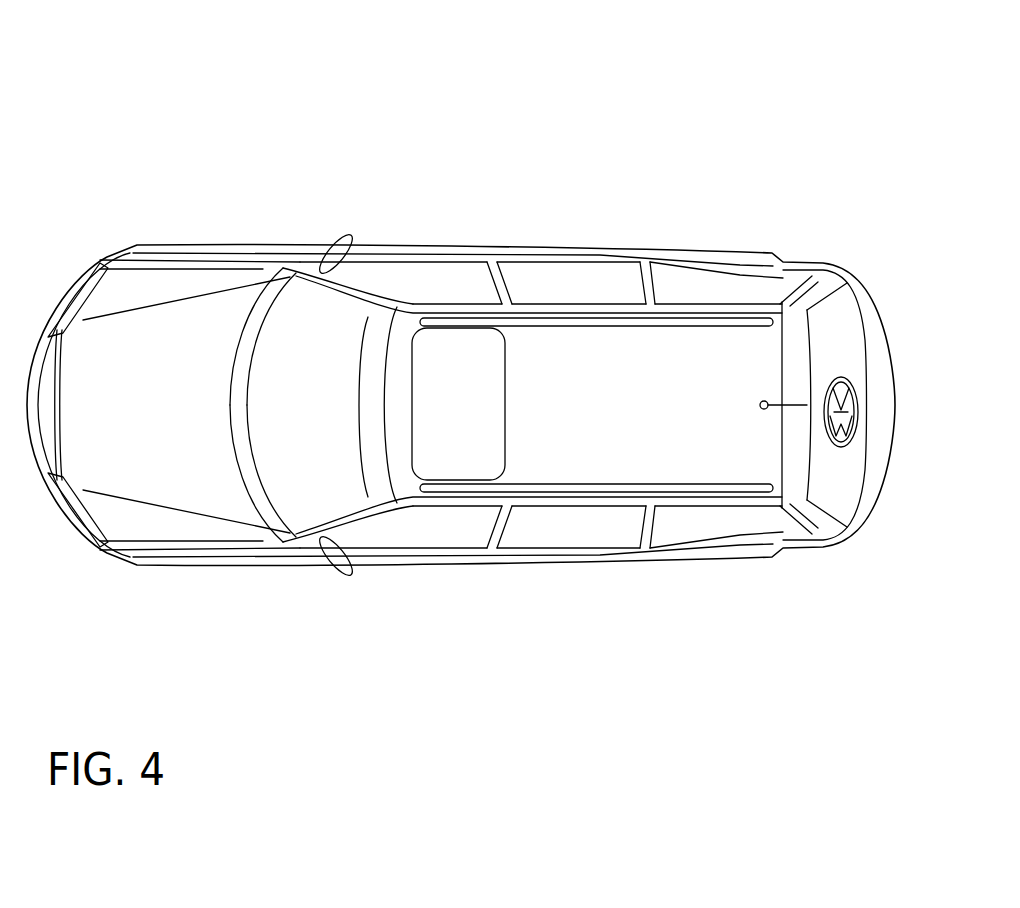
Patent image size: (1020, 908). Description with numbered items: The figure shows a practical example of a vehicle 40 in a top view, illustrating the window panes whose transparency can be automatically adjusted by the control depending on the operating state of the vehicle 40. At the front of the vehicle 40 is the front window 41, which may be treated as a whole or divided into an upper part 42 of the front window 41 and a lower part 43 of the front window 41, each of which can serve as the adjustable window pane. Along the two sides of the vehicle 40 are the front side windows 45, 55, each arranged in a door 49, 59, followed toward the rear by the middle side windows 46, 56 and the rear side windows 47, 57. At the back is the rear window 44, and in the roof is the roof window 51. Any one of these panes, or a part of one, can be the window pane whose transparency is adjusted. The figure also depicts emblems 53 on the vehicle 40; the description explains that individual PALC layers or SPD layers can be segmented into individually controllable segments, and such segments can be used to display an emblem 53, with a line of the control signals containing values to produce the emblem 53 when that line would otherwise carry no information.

The vehicle 40 is at (183, 154).
The front window 41 is at (307, 315).
The upper part of the front window 42 is at (378, 495).
The lower part of the front window 43 is at (305, 495).
The rear window 44 is at (835, 320).
The front side window 45 is at (463, 527).
The middle side window 46 is at (578, 525).
The rear side window 47 is at (710, 523).
The door 49 is at (427, 558).
The roof window 51 is at (455, 365).
The emblem 53 is at (845, 442).
The front side window 55 is at (468, 285).
The middle side window 56 is at (580, 287).
The rear side window 57 is at (713, 292).
The door 59 is at (375, 258).